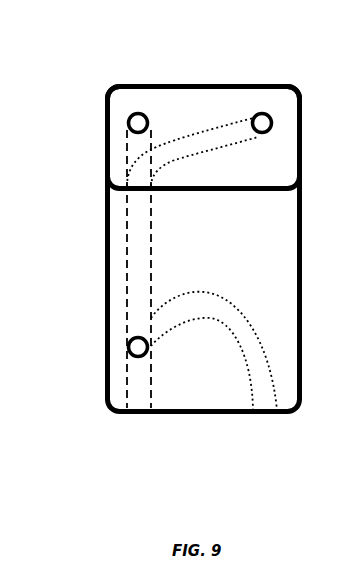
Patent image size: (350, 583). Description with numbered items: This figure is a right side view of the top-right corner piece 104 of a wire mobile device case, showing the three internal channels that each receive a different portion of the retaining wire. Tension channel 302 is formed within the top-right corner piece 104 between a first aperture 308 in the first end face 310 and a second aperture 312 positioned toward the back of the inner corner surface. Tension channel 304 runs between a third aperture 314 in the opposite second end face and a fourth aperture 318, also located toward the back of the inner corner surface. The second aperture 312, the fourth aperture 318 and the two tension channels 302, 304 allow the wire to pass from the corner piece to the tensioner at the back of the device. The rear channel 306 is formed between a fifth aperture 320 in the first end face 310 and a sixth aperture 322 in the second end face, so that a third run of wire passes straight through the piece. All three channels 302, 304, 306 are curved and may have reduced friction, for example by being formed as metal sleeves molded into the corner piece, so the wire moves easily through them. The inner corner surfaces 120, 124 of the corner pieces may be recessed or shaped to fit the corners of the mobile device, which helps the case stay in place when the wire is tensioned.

The top-right corner piece 104 is at (169, 105).
The tension channel 302 is at (218, 134).
The tension channel 304 is at (269, 337).
The rear channel 306 is at (149, 239).
The first aperture 308 is at (283, 122).
The first end face 310 is at (279, 167).
The second aperture 312 is at (138, 200).
The third aperture 314 is at (263, 425).
The fourth aperture 318 is at (117, 347).
The fifth aperture 320 is at (124, 123).
The sixth aperture 322 is at (138, 425).
The inner corner surface 120 is at (203, 425).
The inner corner surface 124 is at (252, 204).